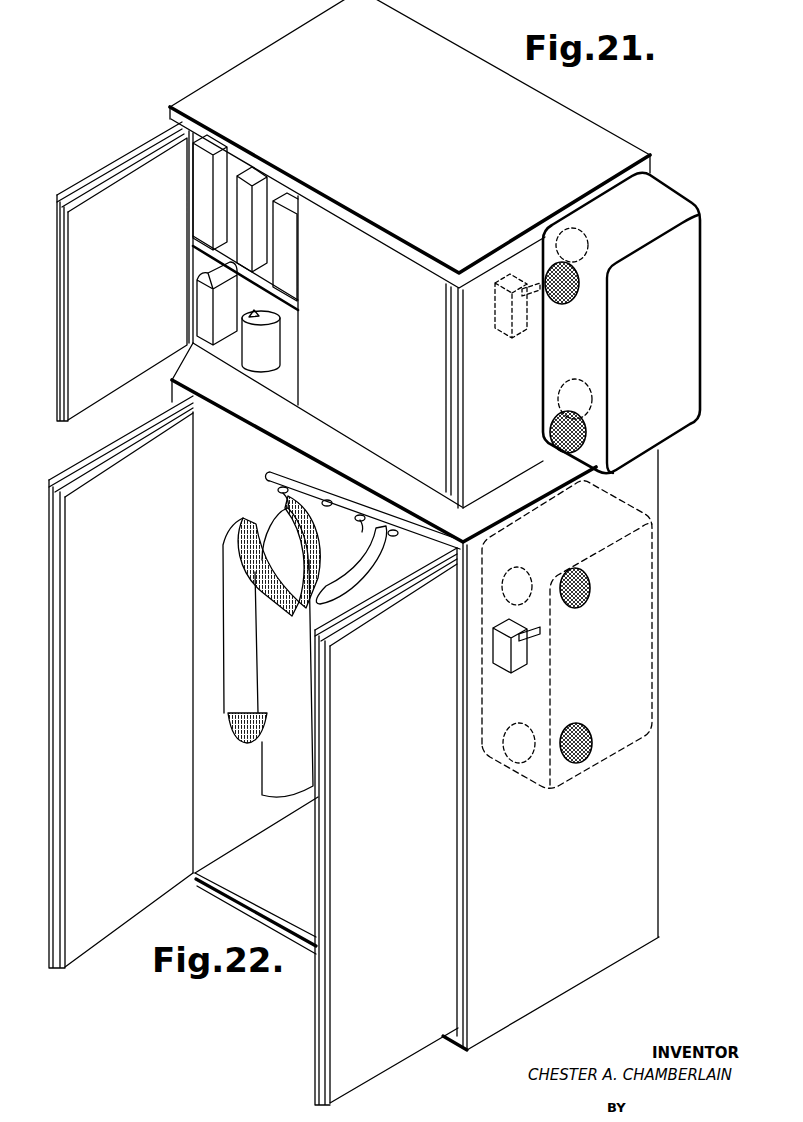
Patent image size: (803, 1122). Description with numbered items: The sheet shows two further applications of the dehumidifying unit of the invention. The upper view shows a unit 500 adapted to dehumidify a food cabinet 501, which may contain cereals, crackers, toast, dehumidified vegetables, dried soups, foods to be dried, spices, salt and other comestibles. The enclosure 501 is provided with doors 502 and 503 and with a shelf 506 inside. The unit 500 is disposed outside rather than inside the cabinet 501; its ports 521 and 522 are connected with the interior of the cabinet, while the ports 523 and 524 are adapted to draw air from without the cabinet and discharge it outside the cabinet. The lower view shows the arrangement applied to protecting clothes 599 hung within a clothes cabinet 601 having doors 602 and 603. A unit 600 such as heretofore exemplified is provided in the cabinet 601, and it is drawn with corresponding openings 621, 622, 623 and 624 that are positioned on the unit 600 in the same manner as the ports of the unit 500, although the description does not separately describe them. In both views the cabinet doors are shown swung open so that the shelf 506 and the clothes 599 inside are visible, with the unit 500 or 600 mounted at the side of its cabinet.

In FIG. 21, the unit 500 is at (692, 297).
In FIG. 21, the food cabinet 501 is at (586, 140).
In FIG. 21, the door 502 is at (79, 358).
In FIG. 21, the door 503 is at (378, 366).
In FIG. 21, the shelf 506 is at (293, 297).
In FIG. 21, the port 521 is at (556, 393).
In FIG. 21, the port 522 is at (590, 234).
In FIG. 21, the port 523 is at (550, 436).
In FIG. 21, the port 524 is at (600, 281).
In FIG. 22, the clothes 599 is at (262, 793).
In FIG. 22, the unit 600 is at (640, 634).
In FIG. 22, the cabinet 601 is at (640, 827).
In FIG. 22, the door 602 is at (388, 1069).
In FIG. 22, the door 603 is at (88, 942).
In FIG. 22, the air opening 621 is at (516, 759).
In FIG. 22, the air opening 622 is at (521, 570).
In FIG. 22, the grille 623 is at (590, 735).
In FIG. 22, the grille 624 is at (591, 585).